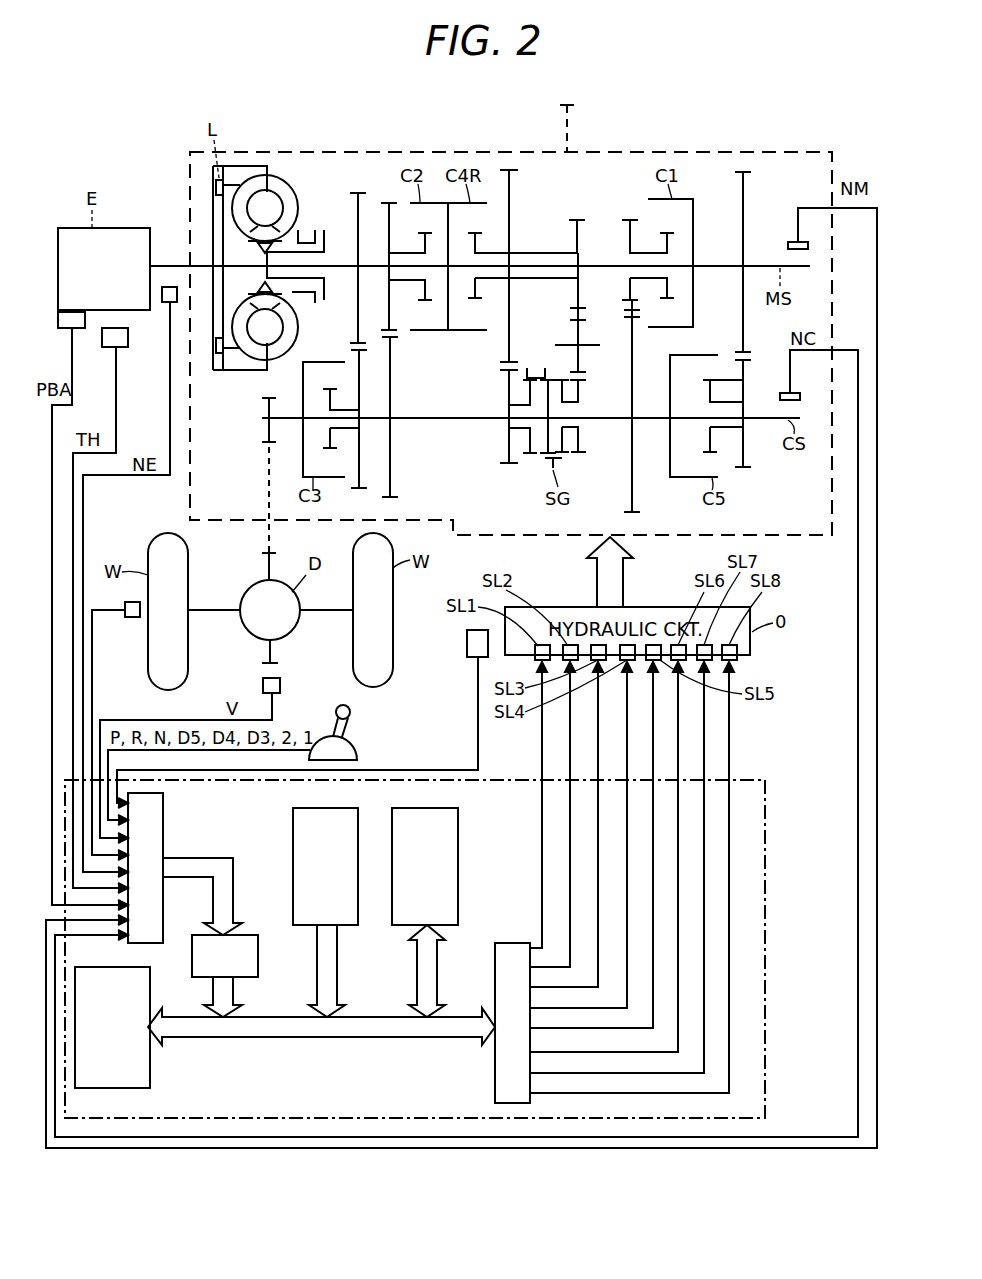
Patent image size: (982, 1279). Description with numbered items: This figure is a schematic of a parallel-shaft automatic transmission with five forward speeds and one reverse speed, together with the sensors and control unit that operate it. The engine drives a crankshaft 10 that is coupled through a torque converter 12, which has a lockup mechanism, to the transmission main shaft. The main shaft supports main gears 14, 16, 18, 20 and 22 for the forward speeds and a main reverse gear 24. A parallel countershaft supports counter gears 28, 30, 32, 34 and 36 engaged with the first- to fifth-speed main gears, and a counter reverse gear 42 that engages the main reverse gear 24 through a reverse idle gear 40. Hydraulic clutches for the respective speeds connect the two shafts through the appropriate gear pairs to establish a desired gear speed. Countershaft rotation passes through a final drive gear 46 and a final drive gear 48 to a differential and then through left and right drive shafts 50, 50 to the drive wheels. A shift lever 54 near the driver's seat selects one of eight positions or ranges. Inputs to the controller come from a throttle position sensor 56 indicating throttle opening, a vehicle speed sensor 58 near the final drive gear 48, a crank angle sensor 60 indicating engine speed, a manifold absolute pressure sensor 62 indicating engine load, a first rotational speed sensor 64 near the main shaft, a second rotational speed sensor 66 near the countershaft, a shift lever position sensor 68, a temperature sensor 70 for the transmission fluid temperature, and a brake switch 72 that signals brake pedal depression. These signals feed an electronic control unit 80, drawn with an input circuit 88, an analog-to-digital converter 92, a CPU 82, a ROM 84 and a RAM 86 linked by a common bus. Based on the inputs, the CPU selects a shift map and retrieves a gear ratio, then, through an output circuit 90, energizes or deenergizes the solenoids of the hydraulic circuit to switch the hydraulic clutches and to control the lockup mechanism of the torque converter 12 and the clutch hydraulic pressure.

The crankshaft 10 is at (178, 264).
The torque converter 12 is at (284, 176).
The main gear 14 is at (630, 220).
The main gear 16 is at (389, 203).
The main gear 18 is at (356, 193).
The main gear 20 is at (509, 170).
The main gear 22 is at (743, 172).
The main reverse gear 24 is at (577, 220).
The counter gear 28 is at (634, 512).
The counter gear 30 is at (392, 497).
The counter gear 32 is at (359, 488).
The counter gear 34 is at (510, 466).
The counter gear 36 is at (746, 468).
The reverse idle gear 40 is at (574, 318).
The counter reverse gear 42 is at (580, 454).
The final drive gear 46 is at (264, 436).
The final drive gear 48 is at (266, 554).
The drive shaft 50 is at (213, 608).
The shift lever 54 is at (358, 720).
The throttle position sensor 56 is at (121, 348).
The vehicle speed sensor 58 is at (280, 686).
The crank angle sensor 60 is at (166, 303).
The manifold absolute pressure sensor 62 is at (76, 336).
The first rotational speed sensor 64 is at (794, 240).
The second rotational speed sensor 66 is at (784, 392).
The shift lever position sensor 68 is at (356, 748).
The temperature sensor 70 is at (466, 644).
The brake switch 72 is at (134, 617).
The electronic control unit 80 is at (770, 870).
The CPU 82 is at (150, 995).
The ROM 84 is at (293, 840).
The RAM 86 is at (458, 832).
The input circuit 88 is at (165, 826).
The output circuit 90 is at (495, 1083).
The A/D converter 92 is at (258, 957).